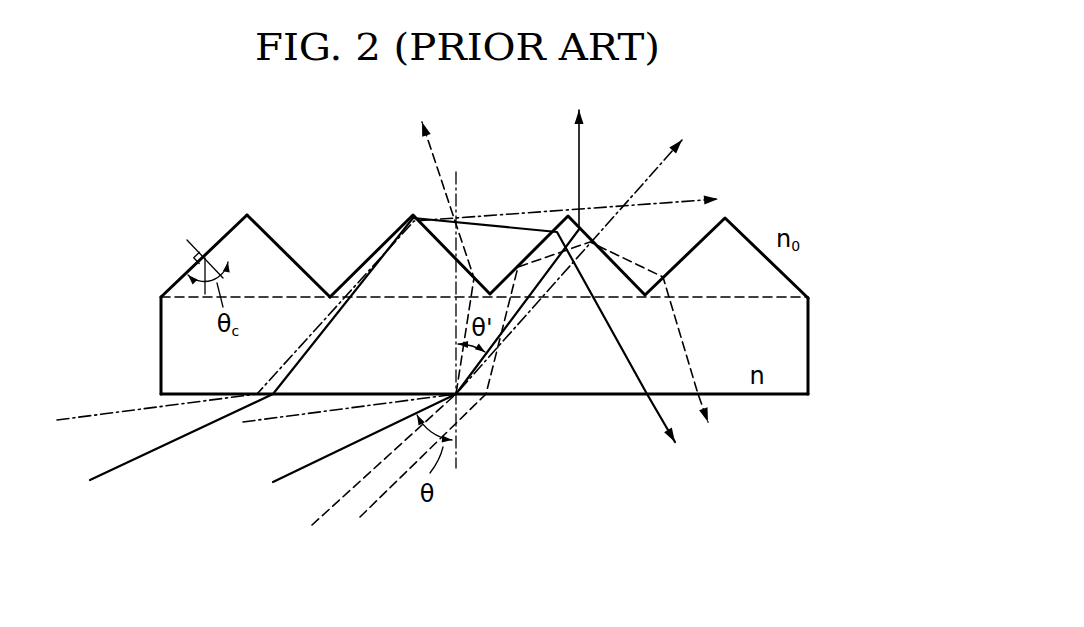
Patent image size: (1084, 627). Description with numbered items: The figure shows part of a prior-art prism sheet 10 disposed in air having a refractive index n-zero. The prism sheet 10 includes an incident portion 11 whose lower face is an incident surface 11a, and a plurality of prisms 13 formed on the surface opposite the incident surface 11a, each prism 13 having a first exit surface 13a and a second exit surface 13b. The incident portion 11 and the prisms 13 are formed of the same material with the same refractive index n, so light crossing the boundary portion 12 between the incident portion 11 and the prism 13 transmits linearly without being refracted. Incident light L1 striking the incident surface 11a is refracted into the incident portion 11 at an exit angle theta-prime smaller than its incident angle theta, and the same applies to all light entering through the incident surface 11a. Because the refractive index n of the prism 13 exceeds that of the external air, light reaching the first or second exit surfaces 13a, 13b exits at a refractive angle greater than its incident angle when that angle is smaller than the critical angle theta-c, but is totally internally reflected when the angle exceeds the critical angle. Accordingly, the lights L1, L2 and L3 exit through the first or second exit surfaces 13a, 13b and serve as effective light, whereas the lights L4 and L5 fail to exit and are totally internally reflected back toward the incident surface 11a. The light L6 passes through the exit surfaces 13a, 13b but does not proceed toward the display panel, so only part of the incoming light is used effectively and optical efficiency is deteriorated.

The prism sheet 10 is at (489, 318).
The incident portion 11 is at (519, 384).
The incident surface 11a is at (758, 396).
The boundary portion 12 is at (489, 231).
The prism 13 is at (207, 230).
The first exit surface 13a is at (218, 240).
The second exit surface 13b is at (288, 252).
The incident light L1 is at (287, 477).
The light L2 is at (323, 513).
The light L3 is at (260, 423).
The light L4 is at (127, 465).
The light L5 is at (368, 513).
The light L6 is at (72, 420).